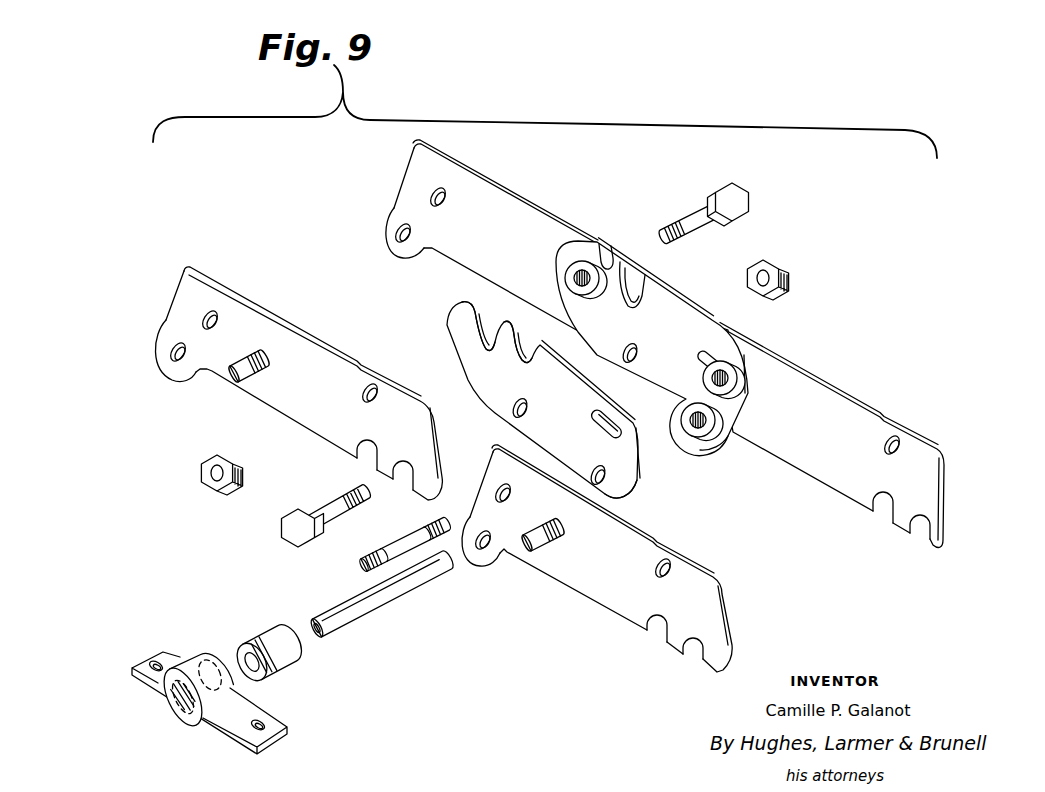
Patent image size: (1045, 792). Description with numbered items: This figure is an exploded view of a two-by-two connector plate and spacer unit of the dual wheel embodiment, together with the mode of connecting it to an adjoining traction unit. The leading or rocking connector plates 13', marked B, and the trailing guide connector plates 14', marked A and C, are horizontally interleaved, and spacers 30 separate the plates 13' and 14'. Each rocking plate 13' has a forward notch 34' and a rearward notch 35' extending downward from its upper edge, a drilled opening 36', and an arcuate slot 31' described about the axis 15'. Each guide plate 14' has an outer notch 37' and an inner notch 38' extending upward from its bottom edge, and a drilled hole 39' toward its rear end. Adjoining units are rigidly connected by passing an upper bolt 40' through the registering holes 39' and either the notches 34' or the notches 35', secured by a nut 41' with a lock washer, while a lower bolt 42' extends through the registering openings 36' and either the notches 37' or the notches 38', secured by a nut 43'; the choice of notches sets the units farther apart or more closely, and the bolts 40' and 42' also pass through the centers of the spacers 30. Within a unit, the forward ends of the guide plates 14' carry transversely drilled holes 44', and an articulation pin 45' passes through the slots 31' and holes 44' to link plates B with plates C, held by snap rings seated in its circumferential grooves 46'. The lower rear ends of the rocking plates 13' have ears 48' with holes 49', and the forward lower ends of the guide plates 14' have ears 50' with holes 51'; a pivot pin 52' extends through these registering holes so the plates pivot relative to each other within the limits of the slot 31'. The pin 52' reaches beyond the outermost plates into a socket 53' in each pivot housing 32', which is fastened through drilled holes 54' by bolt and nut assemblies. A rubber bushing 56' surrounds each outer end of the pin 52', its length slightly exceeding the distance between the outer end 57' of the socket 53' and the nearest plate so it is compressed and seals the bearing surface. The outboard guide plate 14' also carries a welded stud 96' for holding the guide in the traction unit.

The leading connector plate 13' is at (589, 368).
The trailing connector plate 14' is at (555, 406).
The axis 15' is at (339, 652).
The spacer 30 is at (590, 262).
The arcuate slot 31' is at (659, 374).
The pivot housing 32' is at (242, 704).
The forward notch 34' is at (558, 279).
The rearward notch 35' is at (598, 309).
The drilled opening 36' is at (562, 389).
The outer notch 37' is at (649, 579).
The inner notch 38' is at (599, 556).
The drilled hole 39' is at (648, 459).
The upper bolt 40' is at (702, 204).
The nut 41' is at (200, 472).
The lower bolt 42' is at (304, 515).
The nut 43' is at (782, 269).
The transversely drilled hole 44' is at (357, 320).
The articulation pin 45' is at (400, 544).
The circumferential groove 46' is at (385, 536).
The ear 48' is at (679, 474).
The hole 49' is at (630, 477).
The ear 50' is at (319, 400).
The hole 51' is at (327, 397).
The pivot pin 52' is at (382, 596).
The socket 53' is at (210, 650).
The drilled hole 54' is at (239, 670).
The rubber bushing 56' is at (269, 640).
The outer end of socket 57' is at (191, 701).
The stud 96' is at (395, 485).